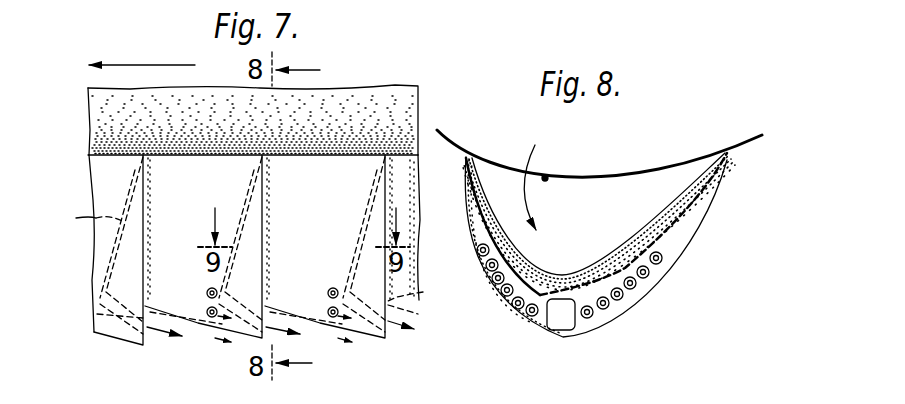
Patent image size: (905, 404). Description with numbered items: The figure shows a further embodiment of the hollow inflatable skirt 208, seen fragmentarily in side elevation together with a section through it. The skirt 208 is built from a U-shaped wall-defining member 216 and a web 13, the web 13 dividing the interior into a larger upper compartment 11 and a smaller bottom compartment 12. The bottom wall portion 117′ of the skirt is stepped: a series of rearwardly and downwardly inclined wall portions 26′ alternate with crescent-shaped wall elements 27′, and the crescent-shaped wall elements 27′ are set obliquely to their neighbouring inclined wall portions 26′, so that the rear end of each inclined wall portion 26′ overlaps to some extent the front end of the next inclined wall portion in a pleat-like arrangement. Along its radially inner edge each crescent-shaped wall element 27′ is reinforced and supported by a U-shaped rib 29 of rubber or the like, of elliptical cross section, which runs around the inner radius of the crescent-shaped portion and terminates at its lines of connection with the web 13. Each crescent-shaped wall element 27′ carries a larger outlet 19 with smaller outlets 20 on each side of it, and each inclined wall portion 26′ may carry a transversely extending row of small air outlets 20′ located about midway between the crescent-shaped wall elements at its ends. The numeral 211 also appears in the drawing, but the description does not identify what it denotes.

In FIG. 7, the body of the blade holder 211 is at (96, 98).
In FIG. 7, the hollow inflatable skirt 208 is at (106, 129).
In FIG. 8, the hollow inflatable skirt 208 is at (730, 150).
In FIG. 7, the bottom wall portion 117′ is at (112, 245).
In FIG. 8, the bottom wall portion 117′ is at (690, 228).
In FIG. 7, the inclined wall portion 26′ is at (115, 345).
In FIG. 8, the inclined wall portion 26′ is at (662, 243).
In FIG. 7, the small air outlets 20′ is at (203, 328).
In FIG. 7, the U-shaped rib 29 is at (249, 256).
In FIG. 8, the U-shaped rib 29 is at (666, 218).
In FIG. 8, the web 13 is at (652, 175).
In FIG. 8, the upper compartment 11 is at (580, 161).
In FIG. 8, the bottom compartment 12 is at (590, 244).
In FIG. 8, the U-shaped wall-defining member 216 is at (464, 157).
In FIG. 8, the smaller outlets 20 is at (510, 303).
In FIG. 8, the larger outlet 19 is at (560, 323).
In FIG. 8, the crescent-shaped wall element 27′ is at (537, 320).